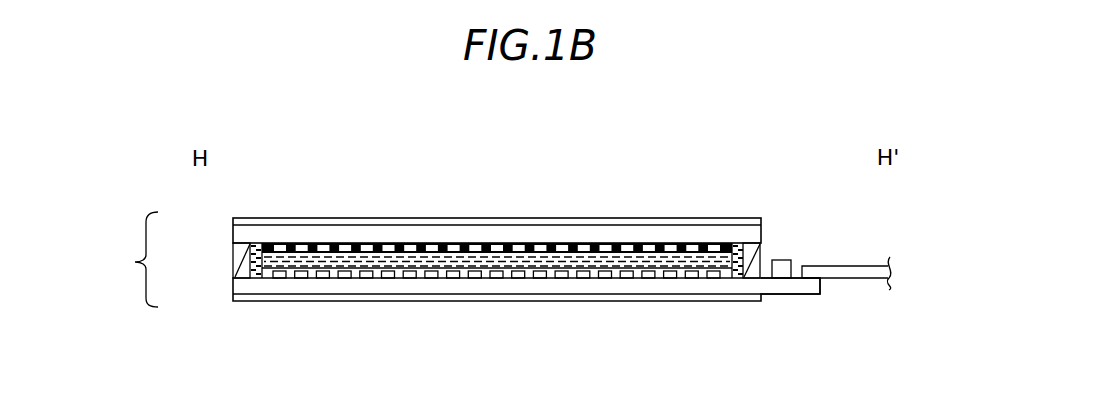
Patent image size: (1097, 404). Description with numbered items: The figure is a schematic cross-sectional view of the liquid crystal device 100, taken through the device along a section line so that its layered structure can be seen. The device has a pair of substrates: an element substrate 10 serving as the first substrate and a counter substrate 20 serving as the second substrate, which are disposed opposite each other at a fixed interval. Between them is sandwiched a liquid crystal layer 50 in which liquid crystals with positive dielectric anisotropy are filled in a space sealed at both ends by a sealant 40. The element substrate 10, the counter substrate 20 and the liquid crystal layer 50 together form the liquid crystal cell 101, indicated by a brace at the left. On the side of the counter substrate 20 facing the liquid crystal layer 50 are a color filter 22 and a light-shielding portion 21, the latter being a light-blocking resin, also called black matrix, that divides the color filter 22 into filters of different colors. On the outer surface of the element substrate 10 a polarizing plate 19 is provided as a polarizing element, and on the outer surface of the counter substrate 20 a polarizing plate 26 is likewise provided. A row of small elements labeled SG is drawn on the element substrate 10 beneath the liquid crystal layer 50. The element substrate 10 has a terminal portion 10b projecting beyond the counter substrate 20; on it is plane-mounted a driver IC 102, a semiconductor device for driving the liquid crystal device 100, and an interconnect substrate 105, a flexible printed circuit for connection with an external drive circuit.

The element substrate 10 is at (241, 286).
The terminal portion 10b is at (793, 288).
The polarizing plate 19 is at (497, 298).
The counter substrate 20 is at (241, 235).
The light-shielding portion 21 is at (401, 246).
The color filter 22 is at (497, 247).
The polarizing plate 26 is at (650, 222).
The sealant 40 is at (241, 262).
The liquid crystal layer 50 is at (618, 258).
The liquid crystal device 100 is at (718, 173).
The liquid crystal cell 101 is at (122, 259).
The driver IC 102 is at (781, 267).
The interconnect substrate 105 is at (863, 269).
The scanning line / gate electrode SG is at (343, 275).